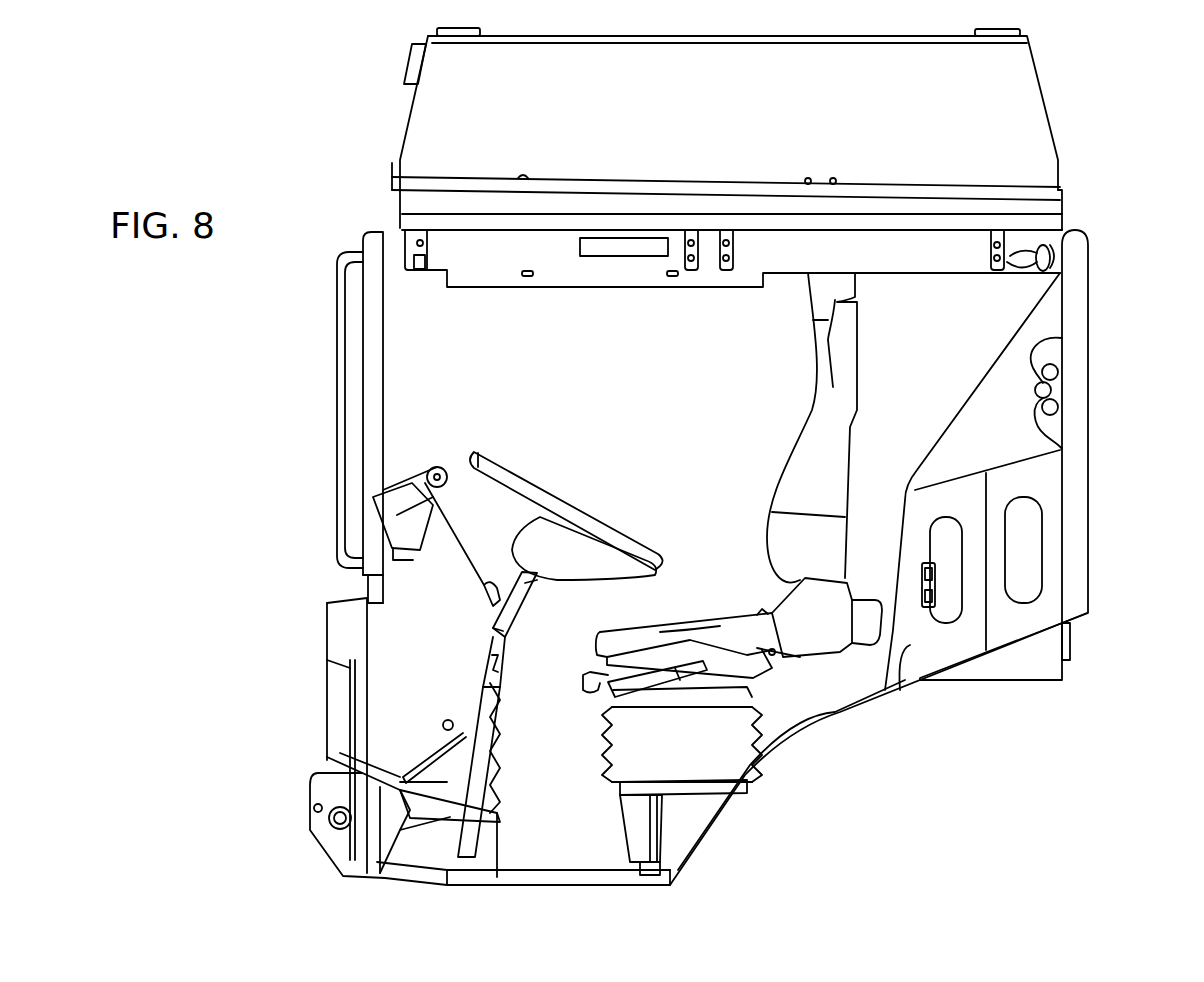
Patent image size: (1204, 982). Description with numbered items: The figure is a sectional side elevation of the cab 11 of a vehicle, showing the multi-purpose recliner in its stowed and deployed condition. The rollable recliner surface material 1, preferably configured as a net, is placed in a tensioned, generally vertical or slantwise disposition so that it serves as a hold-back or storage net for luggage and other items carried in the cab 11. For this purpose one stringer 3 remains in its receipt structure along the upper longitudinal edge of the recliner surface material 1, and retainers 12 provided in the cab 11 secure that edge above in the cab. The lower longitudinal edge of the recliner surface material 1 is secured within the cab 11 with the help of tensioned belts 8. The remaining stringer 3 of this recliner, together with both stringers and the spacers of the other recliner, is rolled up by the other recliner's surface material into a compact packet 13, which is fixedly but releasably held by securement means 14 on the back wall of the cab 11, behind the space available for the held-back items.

The recliner surface material 1 is at (1007, 319).
The stringer 3 is at (1062, 258).
The tensioned belt 8 is at (907, 683).
The cab 11 is at (453, 333).
The retainer 12 is at (1062, 250).
The compact packet 13 is at (1053, 391).
The securement means 14 is at (1037, 415).